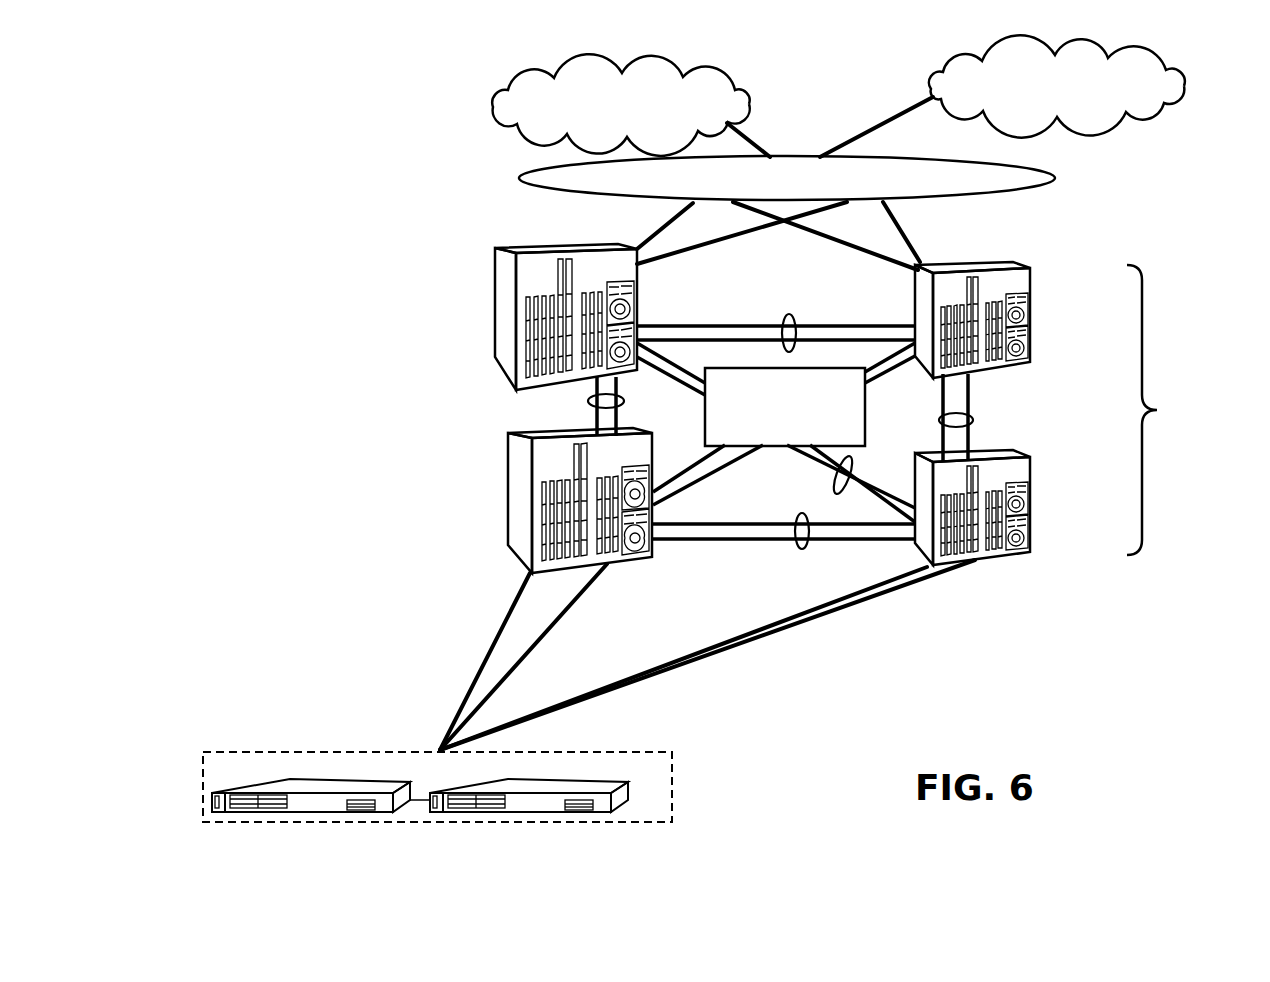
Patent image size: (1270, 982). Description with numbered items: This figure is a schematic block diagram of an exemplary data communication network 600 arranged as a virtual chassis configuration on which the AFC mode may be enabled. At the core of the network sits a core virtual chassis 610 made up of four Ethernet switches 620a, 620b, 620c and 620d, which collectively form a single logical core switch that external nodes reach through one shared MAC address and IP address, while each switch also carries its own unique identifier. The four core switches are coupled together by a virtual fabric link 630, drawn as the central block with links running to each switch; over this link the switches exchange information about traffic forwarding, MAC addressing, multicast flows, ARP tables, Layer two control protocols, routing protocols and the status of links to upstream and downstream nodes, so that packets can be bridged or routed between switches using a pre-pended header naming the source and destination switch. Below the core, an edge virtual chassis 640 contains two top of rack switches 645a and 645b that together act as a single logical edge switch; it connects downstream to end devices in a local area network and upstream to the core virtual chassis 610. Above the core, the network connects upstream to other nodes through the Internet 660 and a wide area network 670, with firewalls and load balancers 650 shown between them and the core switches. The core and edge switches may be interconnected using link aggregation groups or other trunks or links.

The data communication network 600 is at (305, 85).
The core virtual chassis 610 is at (1189, 410).
The Ethernet switch 620a is at (495, 270).
The Ethernet switch 620b is at (508, 466).
The Ethernet switch 620c is at (1030, 278).
The Ethernet switch 620d is at (1030, 465).
The virtual fabric link 630 is at (865, 408).
The edge virtual chassis 640 is at (465, 794).
The top of rack switch 645a is at (327, 807).
The top of rack switch 645b is at (523, 807).
The firewall / load balancers 650 is at (1055, 177).
The Internet 660 is at (693, 73).
The Wide Area Network 670 is at (1133, 57).